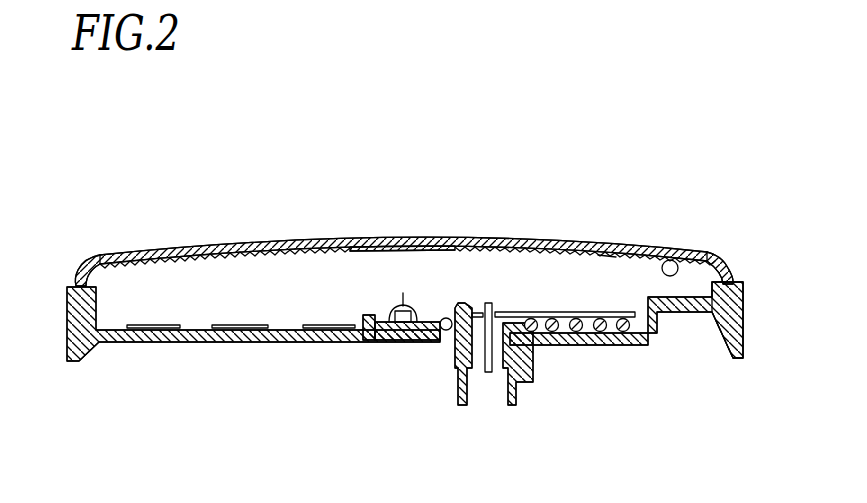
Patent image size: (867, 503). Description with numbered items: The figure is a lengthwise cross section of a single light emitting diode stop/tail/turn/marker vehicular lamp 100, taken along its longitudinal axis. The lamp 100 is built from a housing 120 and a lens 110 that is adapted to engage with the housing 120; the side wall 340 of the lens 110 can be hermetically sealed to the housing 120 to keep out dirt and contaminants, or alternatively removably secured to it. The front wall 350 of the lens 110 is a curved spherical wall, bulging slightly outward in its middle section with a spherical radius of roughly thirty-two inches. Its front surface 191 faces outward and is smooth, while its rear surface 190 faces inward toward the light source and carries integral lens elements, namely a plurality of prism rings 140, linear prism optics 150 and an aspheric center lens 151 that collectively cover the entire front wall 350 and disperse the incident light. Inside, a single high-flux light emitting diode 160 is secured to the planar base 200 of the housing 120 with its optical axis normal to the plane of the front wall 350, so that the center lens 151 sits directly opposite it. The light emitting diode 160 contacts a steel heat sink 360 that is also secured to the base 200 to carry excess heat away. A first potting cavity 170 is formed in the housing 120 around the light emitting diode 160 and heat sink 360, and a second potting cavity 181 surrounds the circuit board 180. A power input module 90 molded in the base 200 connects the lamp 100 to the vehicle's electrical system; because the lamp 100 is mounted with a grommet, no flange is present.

The lamp 100 is at (82, 232).
The side wall 340 is at (88, 258).
The heat sink 360 is at (153, 325).
The linear prism optics 150 is at (325, 242).
The front wall 350 is at (387, 237).
The aspheric center lens 151 is at (405, 240).
The front surface 191 is at (607, 248).
The rear surface 190 is at (692, 253).
The lens 110 is at (720, 257).
The prism rings 140 is at (187, 260).
The base 200 is at (190, 341).
The light emitting diode 160 is at (372, 333).
The first potting cavity 170 is at (453, 337).
The circuit board 180 is at (610, 328).
The second potting cavity 181 is at (638, 331).
The housing 120 is at (747, 325).
The power input module 90 is at (508, 378).